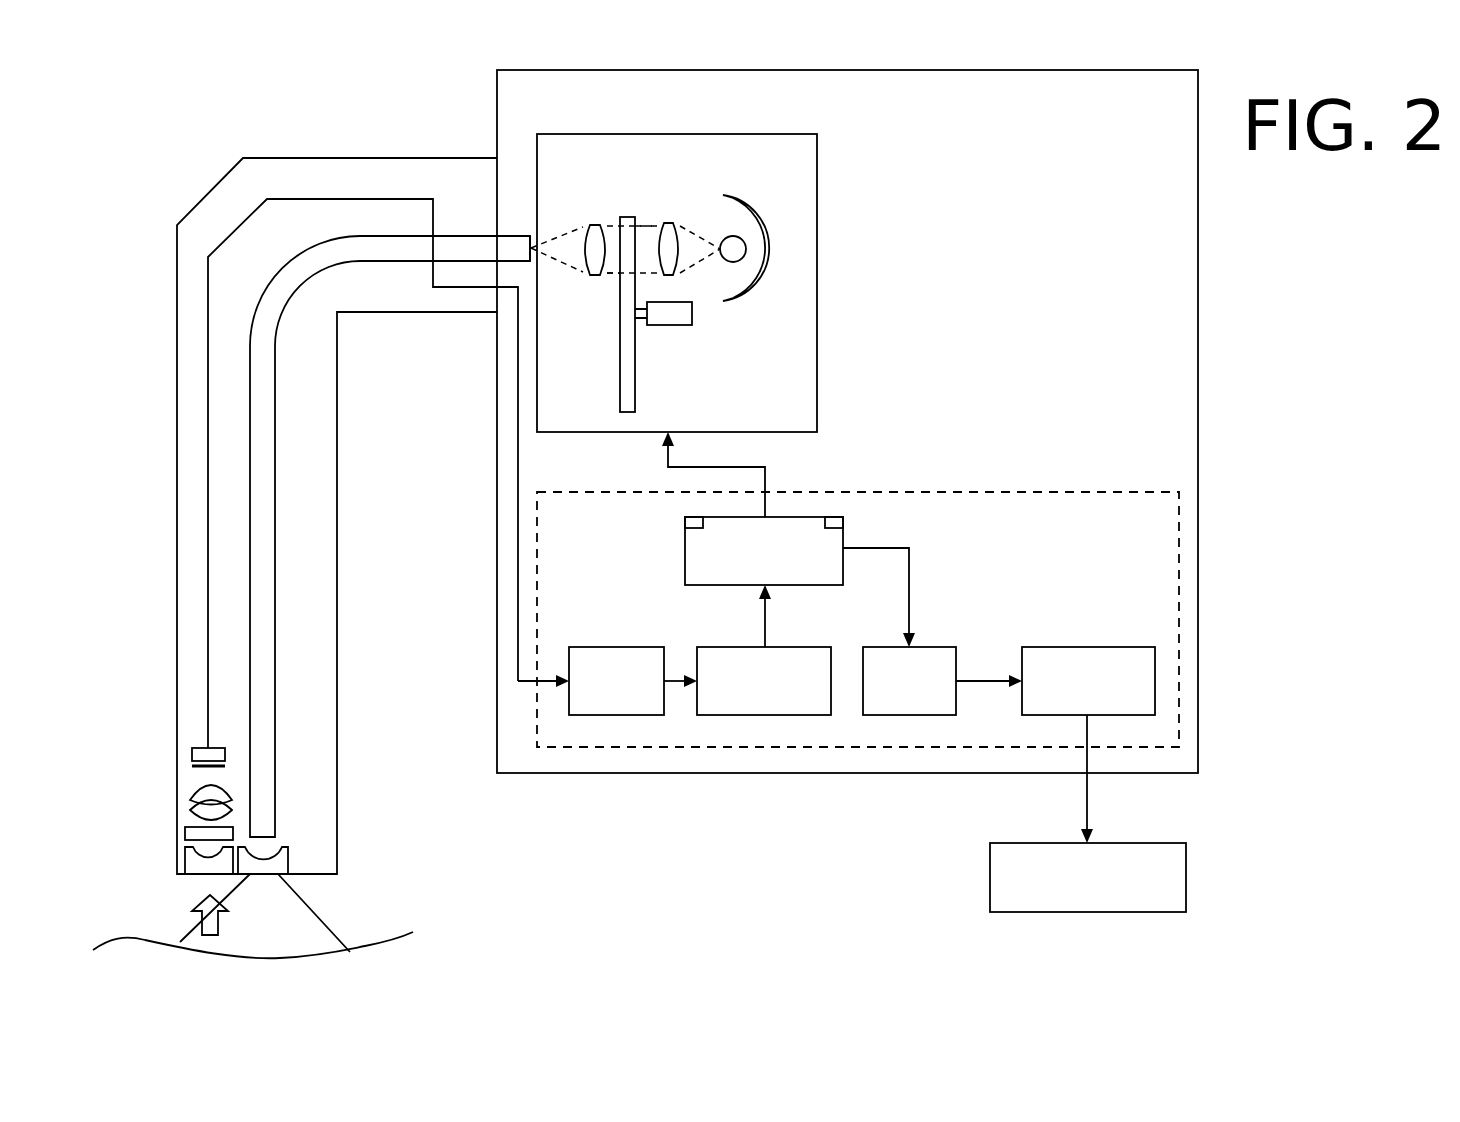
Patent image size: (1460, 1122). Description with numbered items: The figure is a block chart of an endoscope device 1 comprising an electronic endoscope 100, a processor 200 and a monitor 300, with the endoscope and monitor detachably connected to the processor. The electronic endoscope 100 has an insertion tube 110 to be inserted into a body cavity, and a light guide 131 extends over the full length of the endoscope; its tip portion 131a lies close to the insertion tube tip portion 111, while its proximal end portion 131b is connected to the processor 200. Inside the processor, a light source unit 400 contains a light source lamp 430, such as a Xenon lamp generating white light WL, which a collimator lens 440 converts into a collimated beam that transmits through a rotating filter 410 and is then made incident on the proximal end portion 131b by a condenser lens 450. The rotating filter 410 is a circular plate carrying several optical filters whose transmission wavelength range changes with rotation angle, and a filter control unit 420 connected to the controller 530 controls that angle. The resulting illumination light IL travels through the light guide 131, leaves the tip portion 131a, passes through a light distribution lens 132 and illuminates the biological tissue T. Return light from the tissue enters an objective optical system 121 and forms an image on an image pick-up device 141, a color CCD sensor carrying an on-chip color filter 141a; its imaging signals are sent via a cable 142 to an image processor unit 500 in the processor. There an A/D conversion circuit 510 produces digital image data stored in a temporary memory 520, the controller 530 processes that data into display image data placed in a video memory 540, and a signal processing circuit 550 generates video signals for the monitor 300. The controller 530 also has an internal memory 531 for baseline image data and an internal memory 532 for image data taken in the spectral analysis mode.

The endoscope device 1 is at (770, 838).
The electronic endoscope 100 is at (293, 140).
The insertion tube 110 is at (177, 479).
The insertion tube tip portion 111 is at (323, 882).
The objective optical system 121 is at (165, 786).
The light guide 131 is at (248, 630).
The tip portion 131a is at (265, 840).
The proximal end portion 131b is at (536, 236).
The light distribution lens 132 is at (265, 875).
The image pick-up device 141 is at (190, 752).
The color filter 141a is at (189, 782).
The cable 142 is at (206, 376).
The processor 200 is at (1198, 262).
The monitor 300 is at (1186, 875).
The light source unit 400 is at (818, 262).
The rotating filter 410 is at (632, 217).
The filter control unit 420 is at (693, 313).
The light source lamp 430 is at (743, 196).
The collimator lens 440 is at (670, 223).
The condenser lens 450 is at (595, 277).
The image processor unit 500 is at (985, 490).
The A/D conversion circuit 510 is at (640, 647).
The temporary memory 520 is at (745, 647).
The controller 530 is at (685, 560).
The internal memory 531 is at (685, 522).
The internal memory 532 is at (843, 522).
The video memory 540 is at (933, 647).
The signal processing circuit 550 is at (1065, 647).
The biological tissue T is at (382, 942).
The illumination light IL is at (612, 277).
The white light WL is at (643, 220).